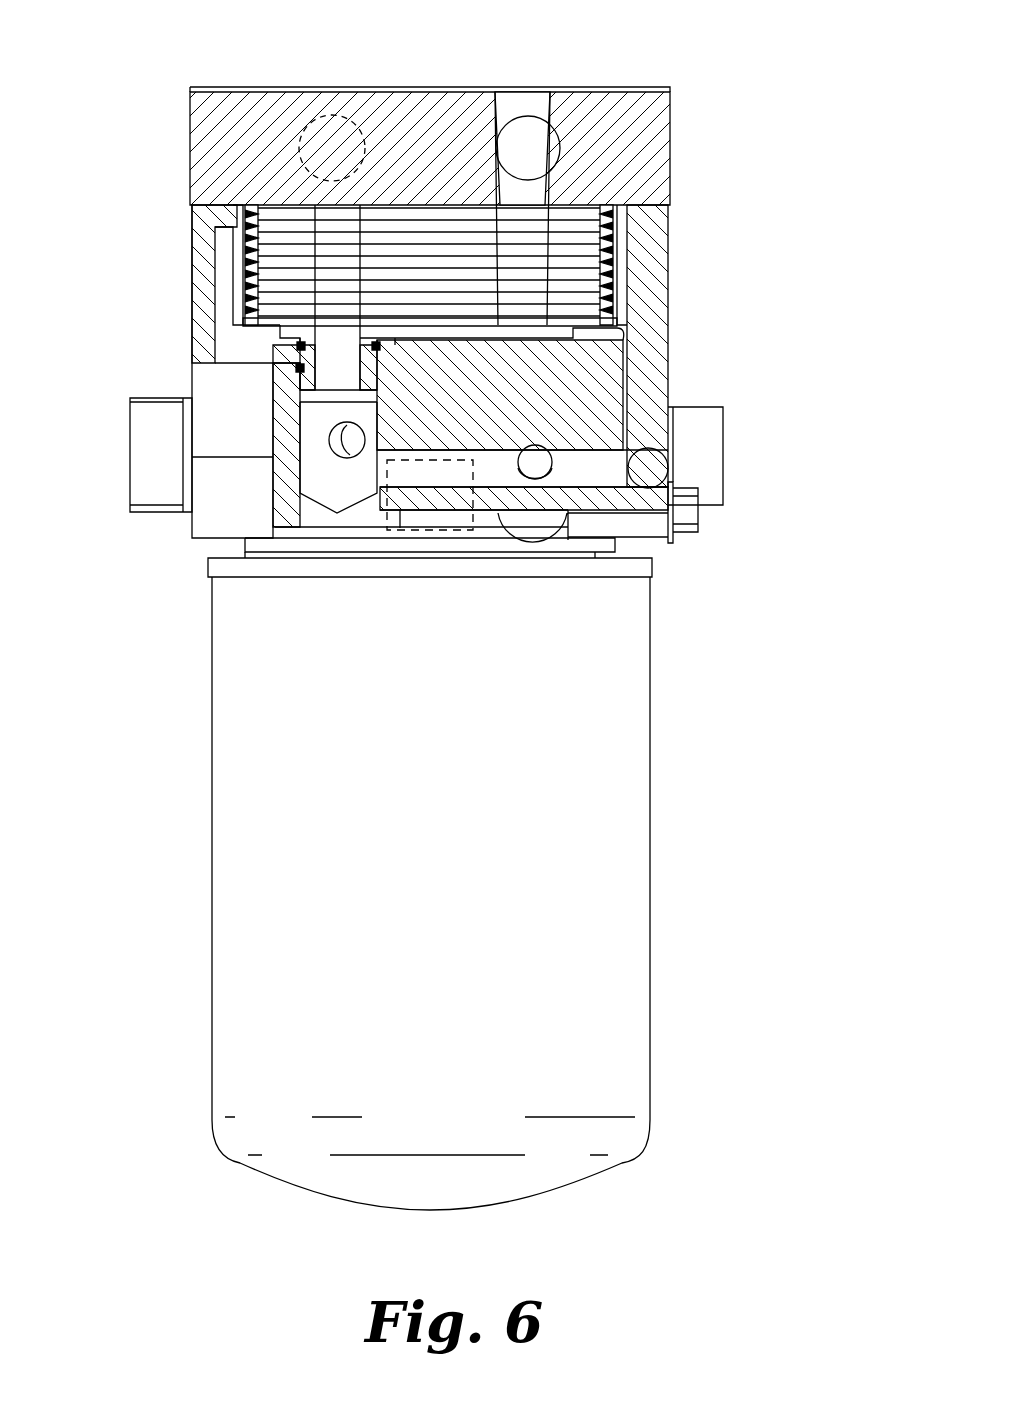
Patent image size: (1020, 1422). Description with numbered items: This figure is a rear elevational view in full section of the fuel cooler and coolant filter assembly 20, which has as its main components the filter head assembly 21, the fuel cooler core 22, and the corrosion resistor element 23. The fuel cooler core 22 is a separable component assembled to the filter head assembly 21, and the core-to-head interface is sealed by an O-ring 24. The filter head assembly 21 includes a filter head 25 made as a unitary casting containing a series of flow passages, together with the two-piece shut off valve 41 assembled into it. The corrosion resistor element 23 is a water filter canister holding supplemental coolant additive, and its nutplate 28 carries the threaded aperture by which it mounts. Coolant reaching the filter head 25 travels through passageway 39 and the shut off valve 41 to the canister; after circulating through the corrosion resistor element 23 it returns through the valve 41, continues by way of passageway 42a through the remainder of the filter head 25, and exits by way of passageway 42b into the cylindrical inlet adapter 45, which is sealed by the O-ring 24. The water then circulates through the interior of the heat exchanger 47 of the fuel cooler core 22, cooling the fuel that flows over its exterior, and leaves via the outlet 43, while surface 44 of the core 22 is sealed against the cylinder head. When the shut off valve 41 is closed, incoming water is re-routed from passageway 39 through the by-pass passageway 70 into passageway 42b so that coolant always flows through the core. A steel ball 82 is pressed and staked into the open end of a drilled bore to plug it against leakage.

The fuel cooler and coolant filter assembly 20 is at (768, 286).
The filter head assembly 21 is at (645, 313).
The fuel cooler core 22 is at (640, 148).
The corrosion resistor element 23 is at (620, 866).
The O-ring 24 is at (295, 368).
The filter head 25 is at (655, 408).
The nutplate 28 is at (653, 562).
The passageway 39 is at (535, 452).
The shut off valve 41 is at (152, 452).
The passageway 42a is at (340, 457).
The passageway 42b is at (313, 402).
The outlet 43 is at (535, 87).
The interface surface 44 is at (303, 87).
The cylindrical inlet adapter 45 is at (300, 380).
The heat exchanger 47 is at (590, 237).
The by-pass passageway 70 is at (672, 478).
The steel ball 82 is at (667, 453).